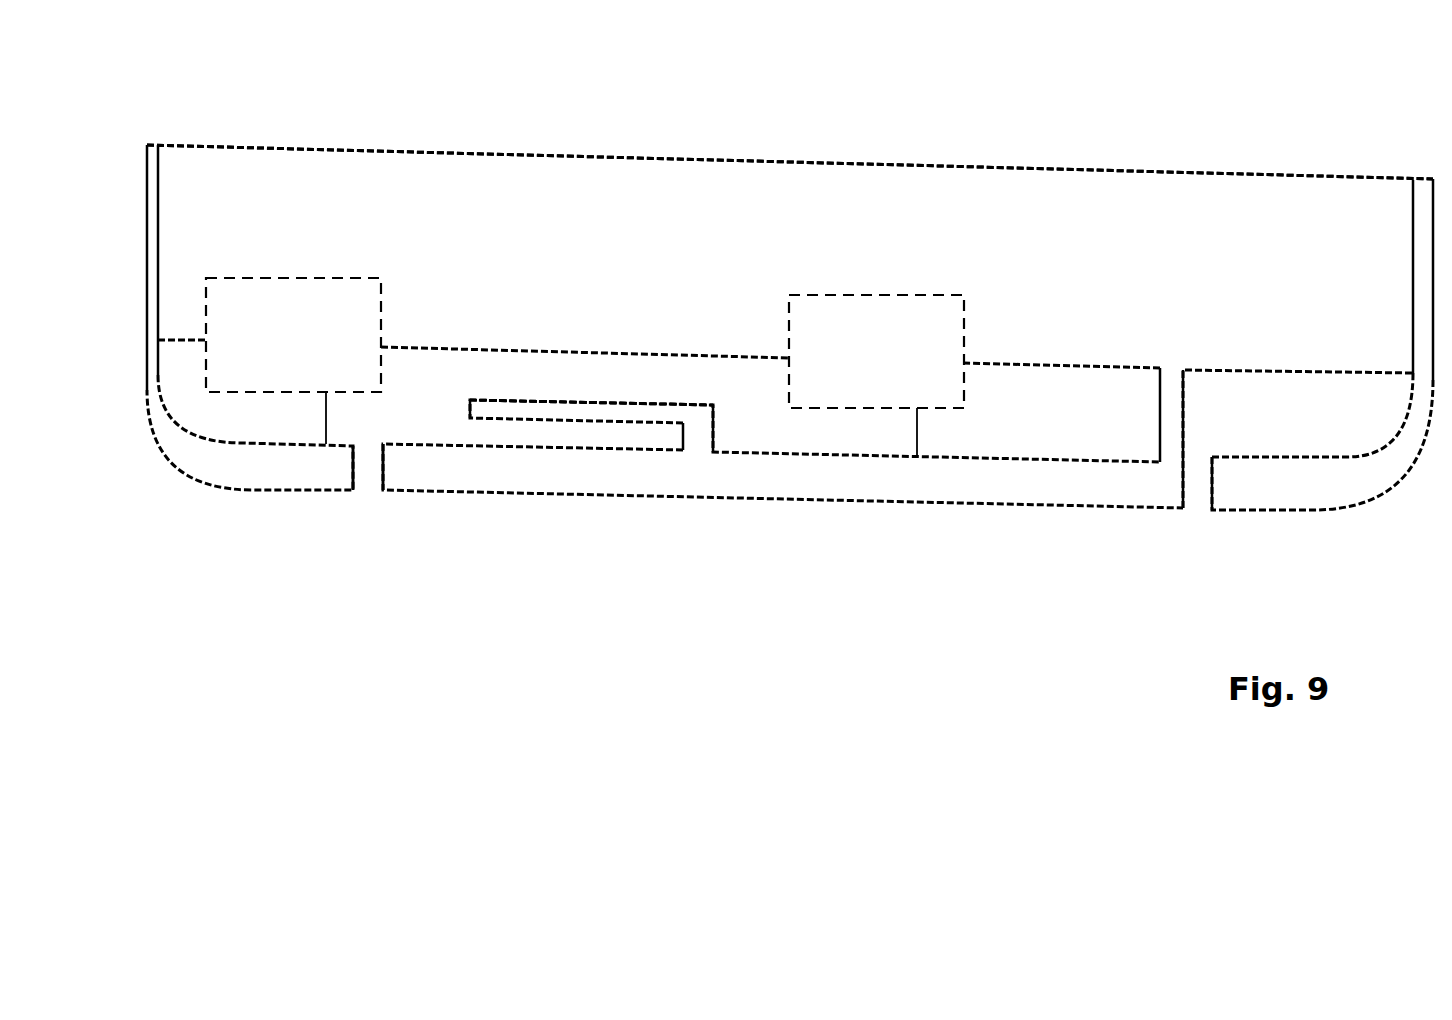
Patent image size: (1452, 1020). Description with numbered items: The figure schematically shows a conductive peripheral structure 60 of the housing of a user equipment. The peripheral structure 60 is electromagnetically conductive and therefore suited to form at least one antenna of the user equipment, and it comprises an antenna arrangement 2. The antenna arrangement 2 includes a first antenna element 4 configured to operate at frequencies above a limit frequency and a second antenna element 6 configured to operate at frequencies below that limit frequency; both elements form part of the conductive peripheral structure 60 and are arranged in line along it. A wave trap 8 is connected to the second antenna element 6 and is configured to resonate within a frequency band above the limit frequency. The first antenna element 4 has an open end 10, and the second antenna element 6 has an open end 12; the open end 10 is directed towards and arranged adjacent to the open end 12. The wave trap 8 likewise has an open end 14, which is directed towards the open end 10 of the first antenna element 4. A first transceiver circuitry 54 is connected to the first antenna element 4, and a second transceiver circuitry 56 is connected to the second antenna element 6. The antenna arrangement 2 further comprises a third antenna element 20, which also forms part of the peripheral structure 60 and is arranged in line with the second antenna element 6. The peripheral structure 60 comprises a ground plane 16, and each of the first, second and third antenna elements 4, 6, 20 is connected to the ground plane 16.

The antenna arrangement 2 is at (947, 538).
The first antenna element 4 is at (242, 467).
The second antenna element 6 is at (573, 470).
The wave trap 8 is at (548, 410).
The open end 10 is at (332, 502).
The open end 12 is at (395, 507).
The open end 14 is at (476, 383).
The ground plane 16 is at (722, 215).
The third antenna element 20 is at (1252, 468).
The first transceiver circuitry 54 is at (473, 361).
The second transceiver circuitry 56 is at (876, 375).
The conductive peripheral structure 60 is at (763, 513).